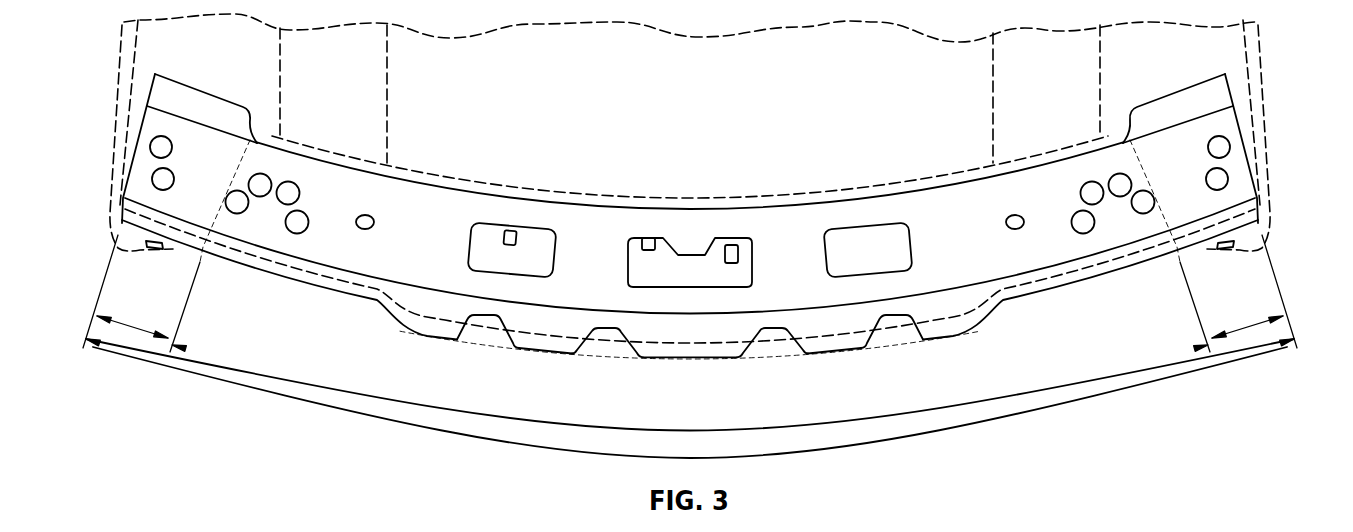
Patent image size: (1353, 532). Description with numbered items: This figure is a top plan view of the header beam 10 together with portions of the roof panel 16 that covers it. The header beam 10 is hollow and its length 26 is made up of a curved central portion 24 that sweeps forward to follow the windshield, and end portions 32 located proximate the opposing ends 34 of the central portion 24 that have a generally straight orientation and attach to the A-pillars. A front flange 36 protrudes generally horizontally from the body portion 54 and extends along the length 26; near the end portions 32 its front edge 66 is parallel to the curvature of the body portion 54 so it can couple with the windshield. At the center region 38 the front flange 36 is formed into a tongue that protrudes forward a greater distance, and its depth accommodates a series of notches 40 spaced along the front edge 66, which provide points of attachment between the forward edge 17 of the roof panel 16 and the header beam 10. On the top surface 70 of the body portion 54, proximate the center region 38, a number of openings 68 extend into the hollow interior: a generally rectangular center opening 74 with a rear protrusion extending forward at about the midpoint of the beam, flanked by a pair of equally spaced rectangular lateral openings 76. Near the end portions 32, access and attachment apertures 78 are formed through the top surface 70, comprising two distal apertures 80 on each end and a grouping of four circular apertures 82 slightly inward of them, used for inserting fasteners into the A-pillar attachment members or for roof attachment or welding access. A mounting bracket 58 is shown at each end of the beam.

The header beam 10 is at (621, 207).
The roof panel 16 is at (681, 96).
The forward edge 17 is at (610, 358).
The central portion 24 is at (690, 391).
The length 26 is at (690, 410).
The end portions 32 is at (690, 291).
The opposing ends 34 is at (205, 289).
The front flange 36 is at (357, 298).
The center region 38 is at (548, 350).
The notches 40 is at (485, 326).
The body portion 54 is at (442, 222).
The mounting bracket 58 is at (198, 102).
The front edge 66 is at (403, 324).
The openings 68 is at (697, 209).
The top surface 70 is at (985, 210).
The center opening 74 is at (693, 263).
The lateral openings 76 is at (530, 248).
The access and attachment apertures 78 is at (688, 158).
The distal apertures 80 is at (150, 147).
The circular apertures 82 is at (288, 193).